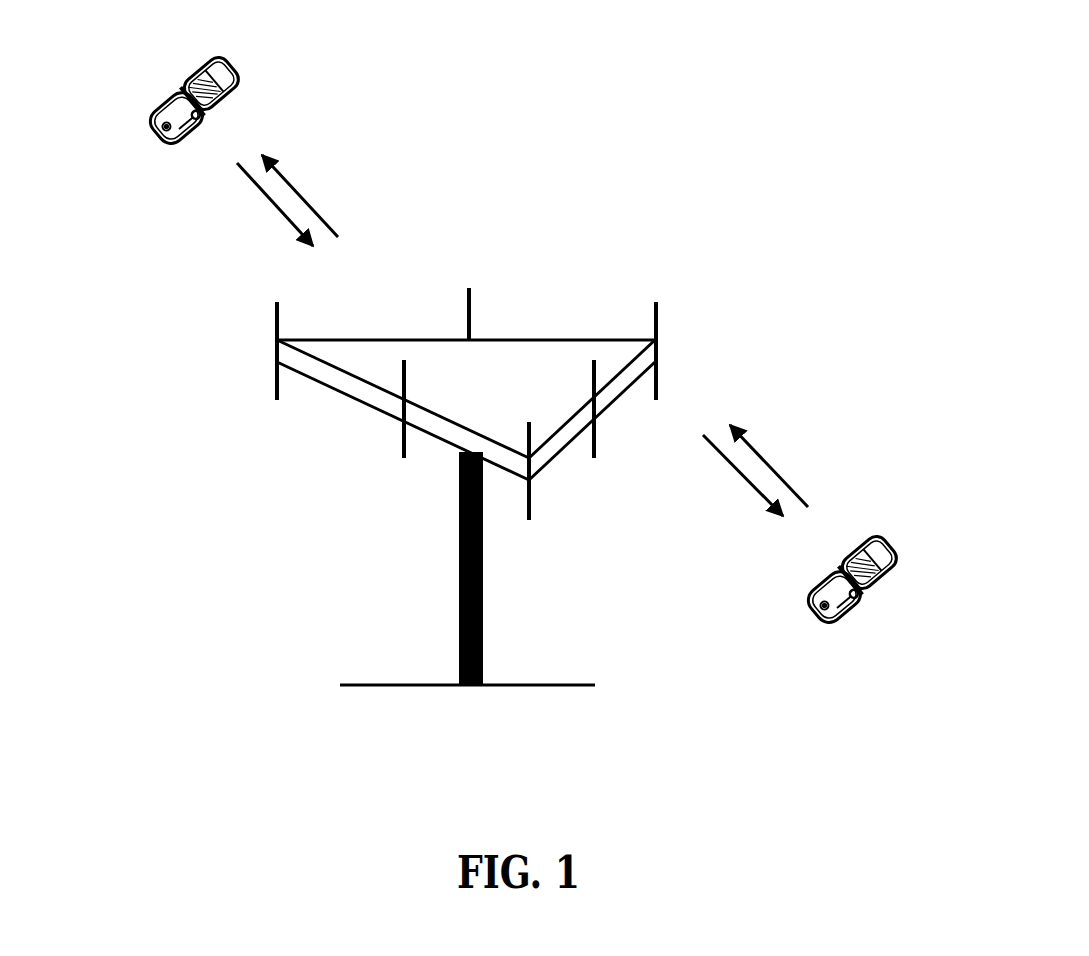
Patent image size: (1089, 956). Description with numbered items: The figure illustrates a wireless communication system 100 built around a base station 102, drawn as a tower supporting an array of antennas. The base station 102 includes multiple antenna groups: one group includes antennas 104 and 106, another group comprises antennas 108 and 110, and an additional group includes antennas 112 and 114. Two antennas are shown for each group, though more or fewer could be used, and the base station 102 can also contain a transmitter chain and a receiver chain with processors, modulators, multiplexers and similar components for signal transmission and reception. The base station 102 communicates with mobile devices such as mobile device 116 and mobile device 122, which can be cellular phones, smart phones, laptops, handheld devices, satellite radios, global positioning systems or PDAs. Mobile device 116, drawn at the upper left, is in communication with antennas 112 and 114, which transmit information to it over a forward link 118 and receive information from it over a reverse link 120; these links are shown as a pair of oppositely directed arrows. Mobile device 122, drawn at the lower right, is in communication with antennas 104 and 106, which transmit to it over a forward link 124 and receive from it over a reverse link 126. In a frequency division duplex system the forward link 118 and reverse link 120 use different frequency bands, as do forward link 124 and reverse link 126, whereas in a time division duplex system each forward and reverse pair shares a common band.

The wireless communication system 100 is at (953, 106).
The base station 102 is at (482, 685).
The antenna 104 is at (657, 303).
The antenna 106 is at (594, 440).
The antenna 108 is at (529, 503).
The antenna 110 is at (404, 458).
The antenna 112 is at (277, 302).
The antenna 114 is at (471, 303).
The mobile device 116 is at (202, 56).
The forward link 118 is at (298, 185).
The reverse link 120 is at (287, 222).
The mobile device 122 is at (857, 534).
The forward link 124 is at (753, 492).
The reverse link 126 is at (765, 450).